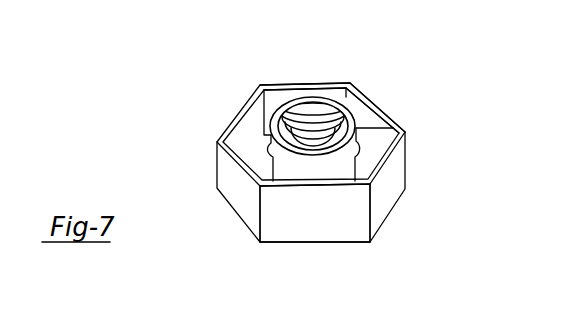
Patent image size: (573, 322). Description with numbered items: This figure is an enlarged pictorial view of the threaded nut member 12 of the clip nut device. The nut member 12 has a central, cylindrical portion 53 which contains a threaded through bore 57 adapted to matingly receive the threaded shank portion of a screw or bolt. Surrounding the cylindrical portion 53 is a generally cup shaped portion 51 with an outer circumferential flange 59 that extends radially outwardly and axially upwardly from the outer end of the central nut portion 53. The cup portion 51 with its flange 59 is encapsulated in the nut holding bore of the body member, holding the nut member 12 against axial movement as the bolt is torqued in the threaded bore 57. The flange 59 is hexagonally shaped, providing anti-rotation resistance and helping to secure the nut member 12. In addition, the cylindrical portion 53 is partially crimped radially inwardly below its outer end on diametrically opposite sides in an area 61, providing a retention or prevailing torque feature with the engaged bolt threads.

The threaded nut member 12 is at (212, 109).
The cup shaped portion 51 is at (373, 127).
The central cylindrical portion 53 is at (311, 108).
The threaded through bore 57 is at (293, 104).
The outer circumferential flange 59 is at (322, 233).
The crimped area 61 is at (268, 153).